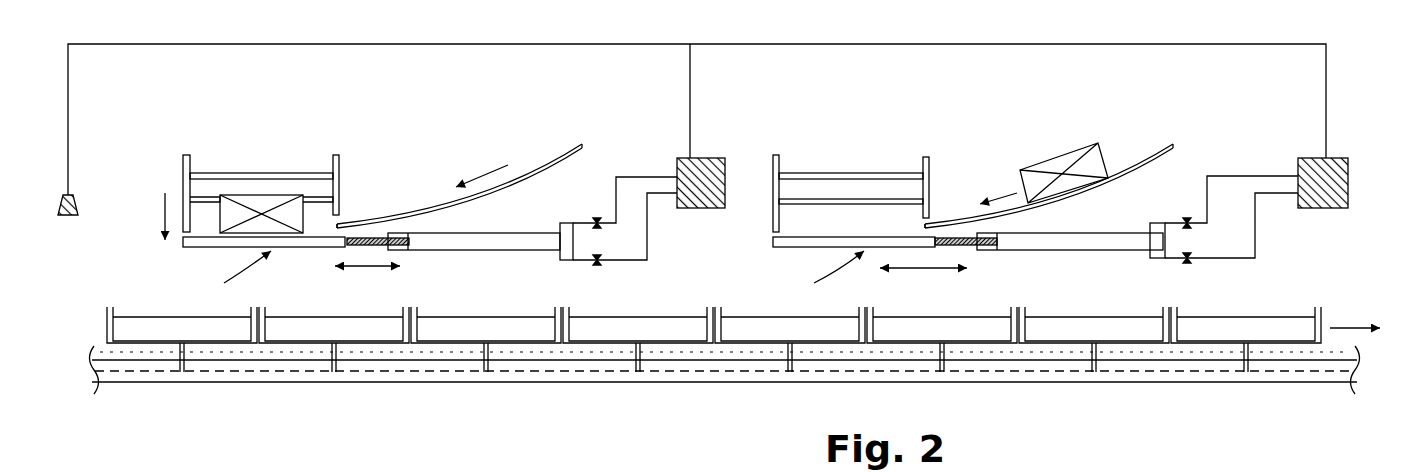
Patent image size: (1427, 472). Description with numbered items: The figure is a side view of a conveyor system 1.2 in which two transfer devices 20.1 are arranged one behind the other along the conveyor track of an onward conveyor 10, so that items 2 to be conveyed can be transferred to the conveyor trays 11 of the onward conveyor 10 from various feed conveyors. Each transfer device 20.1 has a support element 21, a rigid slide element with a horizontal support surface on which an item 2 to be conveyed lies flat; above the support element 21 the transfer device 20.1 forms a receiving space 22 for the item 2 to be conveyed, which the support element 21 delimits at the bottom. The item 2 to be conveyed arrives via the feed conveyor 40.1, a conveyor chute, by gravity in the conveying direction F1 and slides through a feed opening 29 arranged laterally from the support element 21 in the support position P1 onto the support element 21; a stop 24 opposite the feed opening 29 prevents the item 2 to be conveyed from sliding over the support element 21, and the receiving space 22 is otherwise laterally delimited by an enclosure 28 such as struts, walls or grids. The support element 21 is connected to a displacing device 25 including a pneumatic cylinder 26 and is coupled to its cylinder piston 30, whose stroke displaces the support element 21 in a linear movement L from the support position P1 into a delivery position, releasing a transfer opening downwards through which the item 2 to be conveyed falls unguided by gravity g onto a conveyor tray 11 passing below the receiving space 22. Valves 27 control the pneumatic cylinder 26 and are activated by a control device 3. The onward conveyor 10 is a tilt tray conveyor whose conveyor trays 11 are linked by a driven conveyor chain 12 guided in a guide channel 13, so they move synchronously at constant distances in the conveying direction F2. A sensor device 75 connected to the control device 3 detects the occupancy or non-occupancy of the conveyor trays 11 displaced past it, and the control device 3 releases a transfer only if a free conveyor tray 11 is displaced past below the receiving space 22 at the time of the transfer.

The conveyor system 1.2 is at (206, 116).
The transfer device 20.1 is at (184, 150).
The stop 24 is at (182, 163).
The enclosure 28 is at (212, 172).
The item to be conveyed 2 is at (264, 199).
The support element 21 is at (208, 245).
The cylinder piston 30 is at (365, 245).
The displacing device 25 is at (494, 228).
The pneumatic cylinder 26 is at (566, 242).
The valves 27 is at (605, 262).
The control device 3 is at (708, 192).
The receiving space 22 is at (320, 222).
The feed opening 29 is at (342, 218).
The feed conveyor 40.1 is at (746, 151).
The sensor device 75 is at (82, 208).
The onward conveyor 10 is at (156, 296).
The conveyor trays 11 is at (347, 328).
The conveyor chain 12 is at (398, 372).
The guide channel 13 is at (283, 381).
The conveying direction F1 is at (493, 170).
The conveying direction of the onward conveyor F2 is at (1347, 326).
The support position P1 is at (528, 275).
The linear movement L is at (342, 268).
The gravity g is at (163, 212).